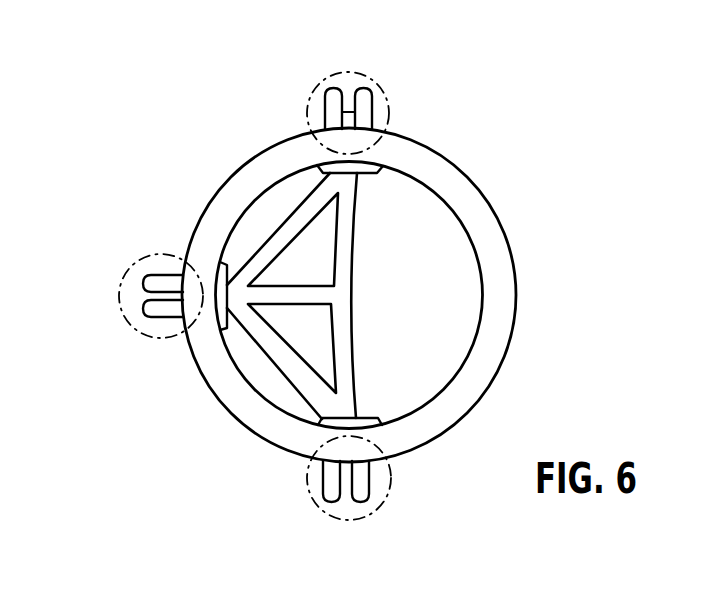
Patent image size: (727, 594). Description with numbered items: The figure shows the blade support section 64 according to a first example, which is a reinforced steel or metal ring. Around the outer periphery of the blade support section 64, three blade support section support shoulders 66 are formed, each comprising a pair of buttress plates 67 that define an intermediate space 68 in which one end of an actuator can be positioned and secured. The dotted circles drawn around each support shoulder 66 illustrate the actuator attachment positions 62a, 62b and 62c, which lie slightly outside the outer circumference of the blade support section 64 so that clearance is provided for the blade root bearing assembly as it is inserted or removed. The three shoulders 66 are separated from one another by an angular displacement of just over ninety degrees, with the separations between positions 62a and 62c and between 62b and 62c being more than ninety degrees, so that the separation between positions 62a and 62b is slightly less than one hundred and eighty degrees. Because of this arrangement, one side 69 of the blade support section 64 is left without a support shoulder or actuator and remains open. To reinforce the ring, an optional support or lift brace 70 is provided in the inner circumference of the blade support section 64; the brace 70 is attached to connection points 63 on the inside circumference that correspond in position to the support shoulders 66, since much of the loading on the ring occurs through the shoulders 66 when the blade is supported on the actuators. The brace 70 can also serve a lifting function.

The side of the blade support section 69 is at (535, 264).
The blade support section 64 is at (469, 394).
The connection points 63 is at (214, 268).
The support brace 70 is at (290, 367).
The actuator attachment position 62a is at (307, 112).
The actuator attachment position 62b is at (372, 512).
The actuator attachment position 62c is at (134, 323).
The blade support section support shoulder 66 is at (365, 71).
The buttress plates 67 is at (333, 88).
The intermediate space 68 is at (356, 112).